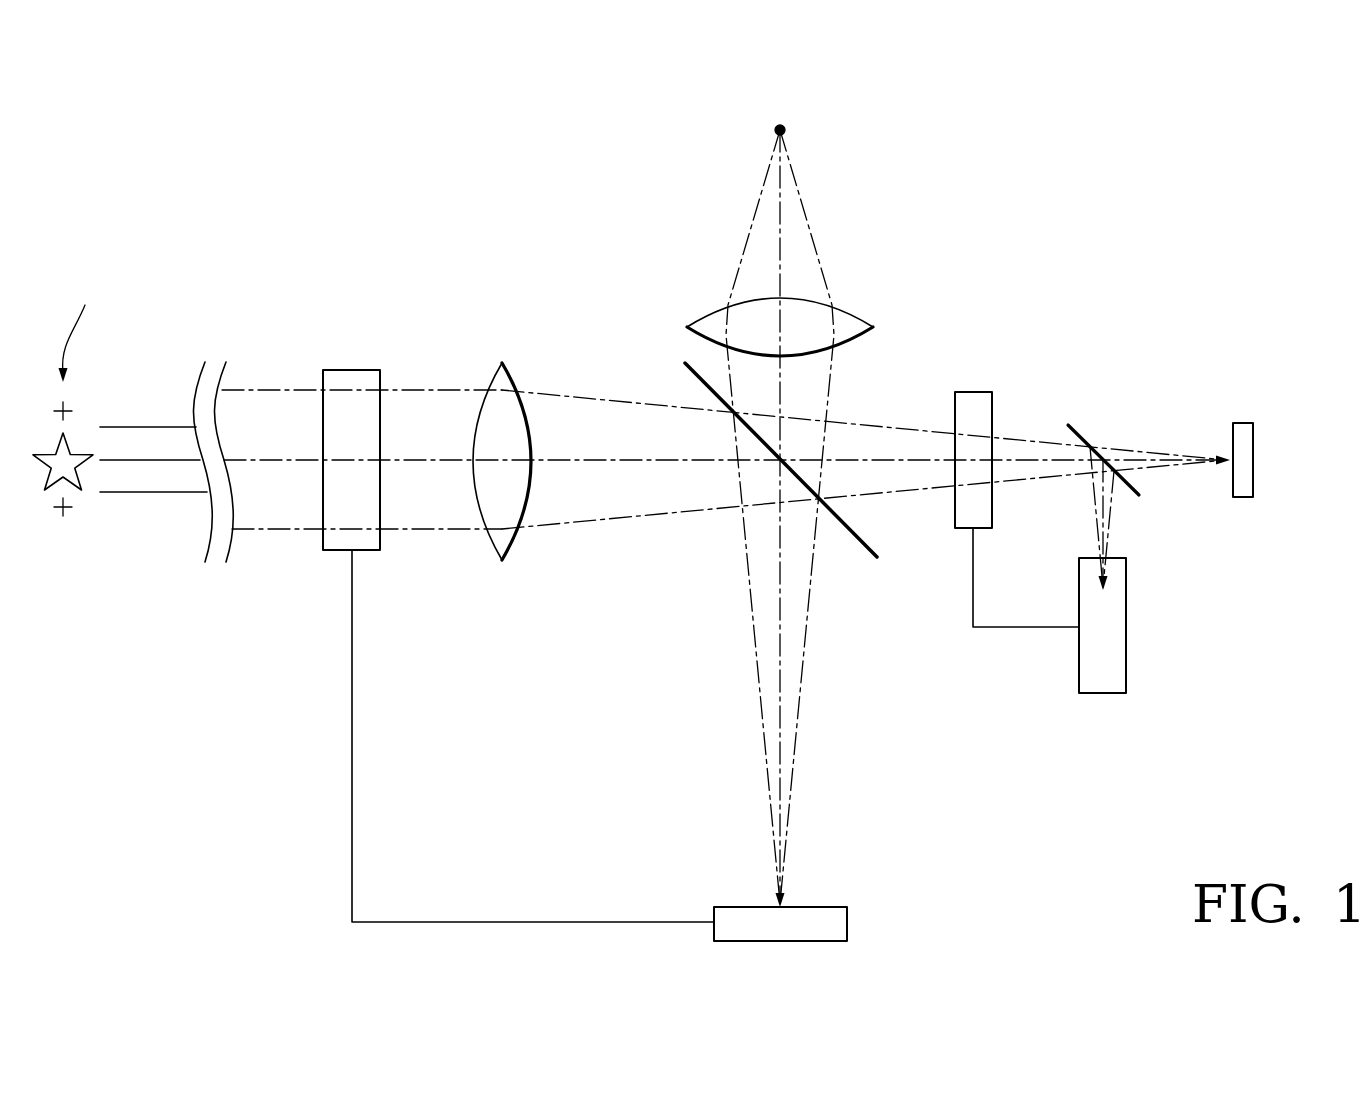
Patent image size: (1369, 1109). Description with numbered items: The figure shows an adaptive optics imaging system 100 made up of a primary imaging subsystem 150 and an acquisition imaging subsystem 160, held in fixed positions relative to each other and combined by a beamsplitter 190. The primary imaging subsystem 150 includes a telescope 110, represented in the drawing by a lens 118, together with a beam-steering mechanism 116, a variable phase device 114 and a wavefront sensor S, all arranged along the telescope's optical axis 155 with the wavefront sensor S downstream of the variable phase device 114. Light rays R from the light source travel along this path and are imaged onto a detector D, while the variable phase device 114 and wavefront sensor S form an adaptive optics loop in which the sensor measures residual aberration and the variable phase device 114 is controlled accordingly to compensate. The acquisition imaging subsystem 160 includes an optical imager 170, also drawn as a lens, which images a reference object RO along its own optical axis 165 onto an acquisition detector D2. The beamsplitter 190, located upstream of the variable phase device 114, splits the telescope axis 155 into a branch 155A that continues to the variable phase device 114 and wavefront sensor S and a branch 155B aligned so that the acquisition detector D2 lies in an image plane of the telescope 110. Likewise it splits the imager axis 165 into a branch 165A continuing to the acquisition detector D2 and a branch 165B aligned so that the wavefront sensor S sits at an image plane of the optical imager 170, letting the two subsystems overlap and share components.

The adaptive optics imaging system 100 is at (362, 165).
The telescope 110 is at (485, 597).
The variable phase device 114 is at (975, 392).
The beam-steering mechanism 116 is at (345, 370).
The lens 118 is at (502, 363).
The primary imaging subsystem 150 is at (560, 294).
The optical axis 155 is at (665, 462).
The branch of optical axis 155A is at (887, 462).
The branch of optical axis 155B is at (780, 750).
The acquisition imaging subsystem 160 is at (948, 242).
The optical axis 165 is at (780, 245).
The branch of optical axis 165A is at (869, 763).
The branch of optical axis 165B is at (1003, 534).
The optical imager 170 is at (873, 327).
The beamsplitter 190 is at (688, 366).
The light rays R is at (440, 390).
The reference object RO is at (781, 112).
The detector D is at (1253, 460).
The acquisition detector D2 is at (847, 925).
The wavefront sensor S is at (1126, 623).